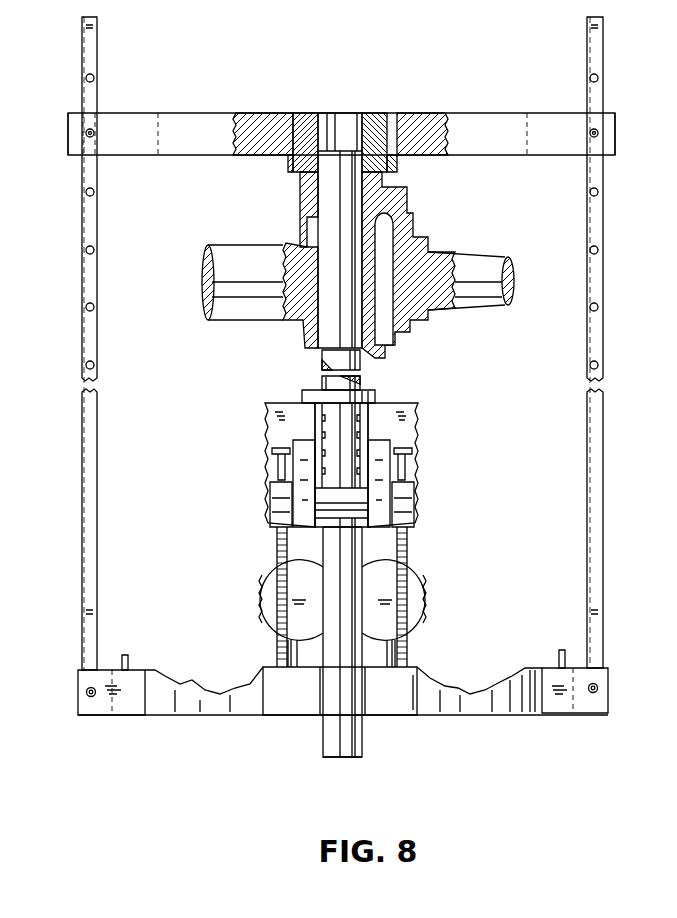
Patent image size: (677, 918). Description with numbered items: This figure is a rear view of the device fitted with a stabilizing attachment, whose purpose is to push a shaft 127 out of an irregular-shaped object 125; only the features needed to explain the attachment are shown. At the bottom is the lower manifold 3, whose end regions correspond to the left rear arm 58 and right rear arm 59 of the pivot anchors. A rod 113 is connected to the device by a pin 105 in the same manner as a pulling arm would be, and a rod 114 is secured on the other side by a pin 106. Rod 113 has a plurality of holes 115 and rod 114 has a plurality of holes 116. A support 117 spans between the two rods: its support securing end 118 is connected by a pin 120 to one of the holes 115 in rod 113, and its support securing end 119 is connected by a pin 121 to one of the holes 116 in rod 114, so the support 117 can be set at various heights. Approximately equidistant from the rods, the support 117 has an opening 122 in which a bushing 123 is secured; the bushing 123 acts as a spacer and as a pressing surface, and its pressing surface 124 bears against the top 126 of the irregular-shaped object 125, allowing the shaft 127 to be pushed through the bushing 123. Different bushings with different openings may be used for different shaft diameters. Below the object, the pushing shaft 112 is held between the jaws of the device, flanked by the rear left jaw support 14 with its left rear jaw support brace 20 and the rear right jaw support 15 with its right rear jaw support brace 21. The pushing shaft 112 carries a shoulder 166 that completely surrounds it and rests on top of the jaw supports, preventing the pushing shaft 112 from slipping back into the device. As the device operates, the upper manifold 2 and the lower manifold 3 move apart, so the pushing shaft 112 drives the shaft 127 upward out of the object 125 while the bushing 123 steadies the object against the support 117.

The upper manifold 2 is at (410, 528).
The lower manifold 3 is at (507, 715).
The rear left jaw support 14 is at (408, 403).
The rear right jaw support 15 is at (276, 403).
The left rear jaw support brace 20 is at (390, 441).
The right rear jaw support brace 21 is at (293, 441).
The left rear arm 58 is at (608, 694).
The right rear arm 59 is at (87, 692).
The pin 105 is at (595, 686).
The pin 106 is at (78, 688).
The pushing shaft 112 is at (322, 552).
The rod 113 is at (603, 266).
The rod 114 is at (83, 293).
The holes 115 is at (594, 248).
The holes 116 is at (88, 250).
The support 117 is at (210, 113).
The support securing end 118 is at (612, 115).
The support securing end 119 is at (68, 120).
The pin 120 is at (597, 135).
The pin 121 is at (87, 135).
The opening 122 is at (316, 135).
The bushing 123 is at (286, 163).
The pressing surface 124 is at (297, 173).
The irregular-shaped object 125 is at (468, 250).
The top 126 is at (393, 164).
The shaft 127 is at (318, 334).
The shoulder 166 is at (372, 394).